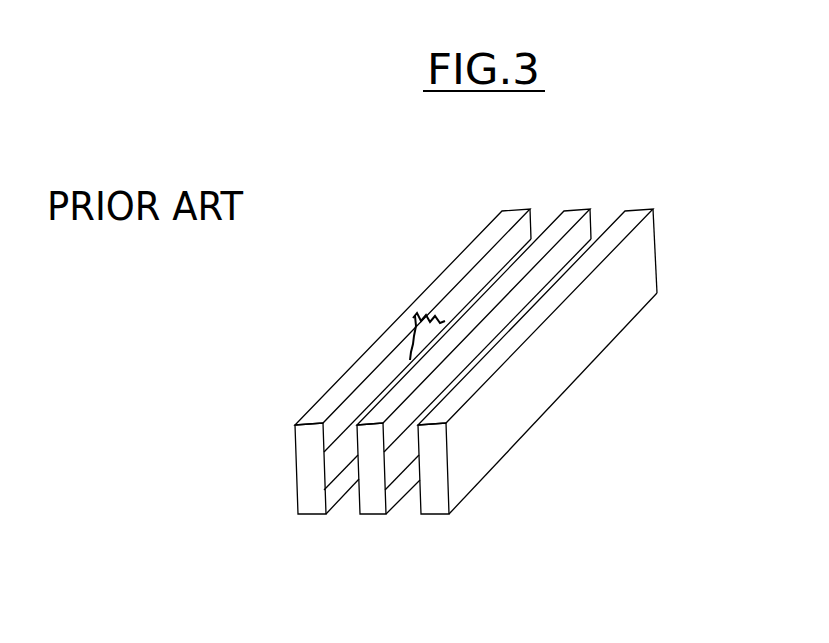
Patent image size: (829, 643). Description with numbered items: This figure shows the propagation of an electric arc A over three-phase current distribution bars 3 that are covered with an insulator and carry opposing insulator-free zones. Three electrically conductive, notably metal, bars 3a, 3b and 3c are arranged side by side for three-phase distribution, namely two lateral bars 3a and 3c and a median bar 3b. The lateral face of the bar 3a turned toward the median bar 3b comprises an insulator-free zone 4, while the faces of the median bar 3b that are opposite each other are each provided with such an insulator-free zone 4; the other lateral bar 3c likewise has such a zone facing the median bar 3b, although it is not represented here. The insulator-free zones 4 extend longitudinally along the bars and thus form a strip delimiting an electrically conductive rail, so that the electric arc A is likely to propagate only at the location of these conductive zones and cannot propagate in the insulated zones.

The three-phase current distribution bars 3 is at (501, 379).
The lateral bar 3a is at (443, 271).
The median bar 3b is at (576, 208).
The lateral bar 3c is at (648, 282).
The insulator-free zone 4 is at (395, 462).
The electric arc A is at (412, 330).